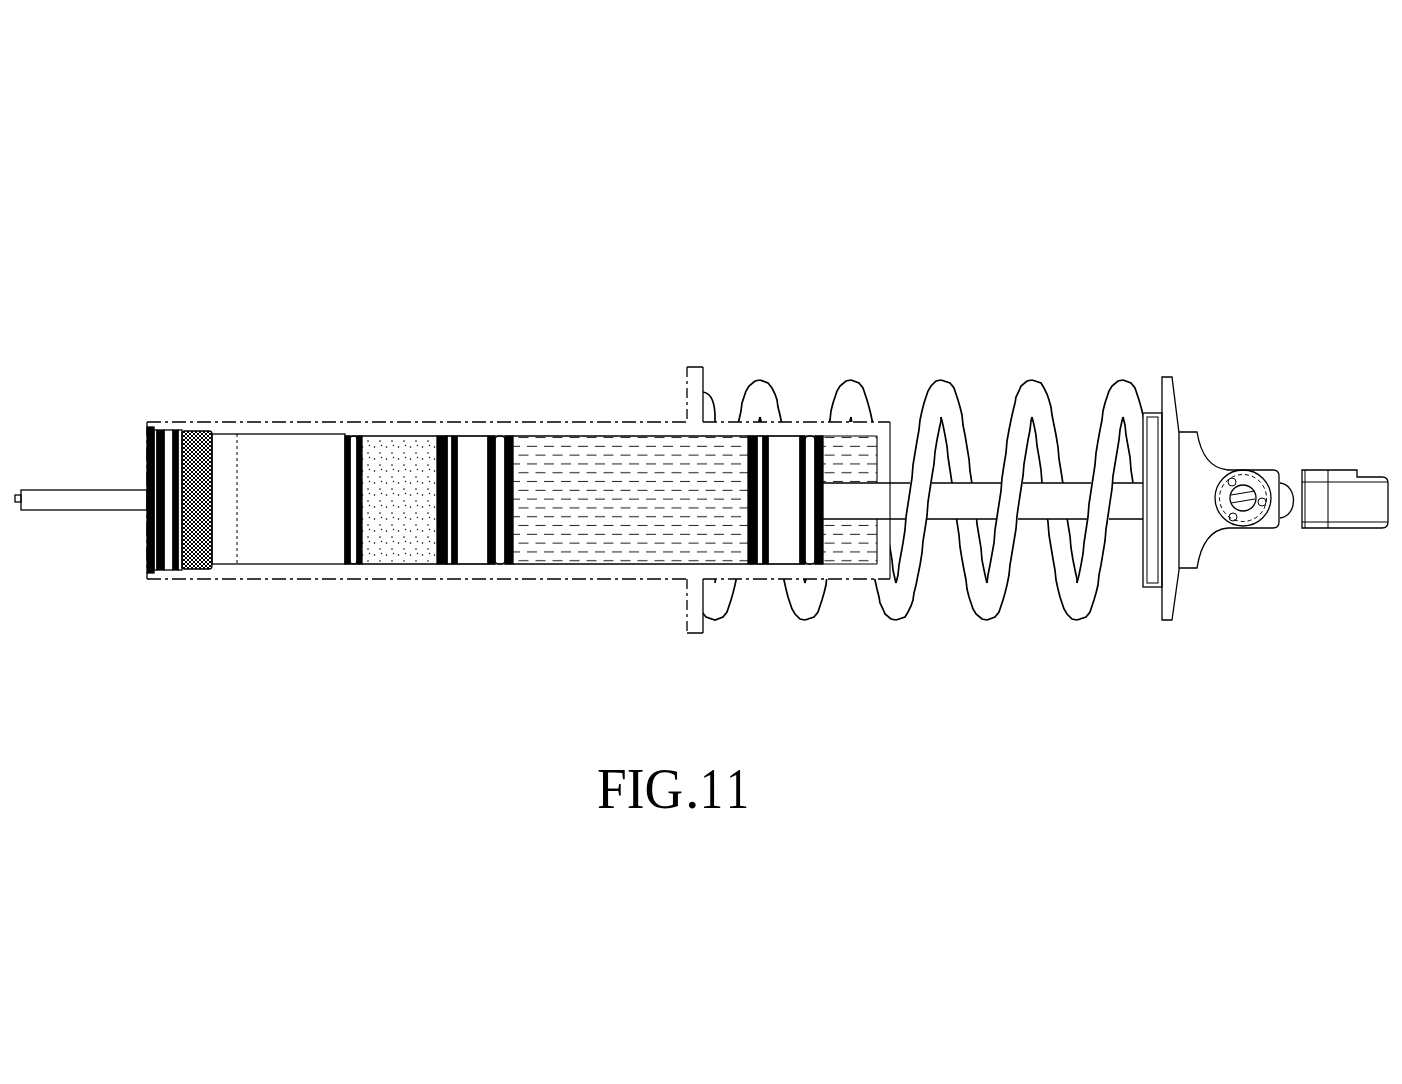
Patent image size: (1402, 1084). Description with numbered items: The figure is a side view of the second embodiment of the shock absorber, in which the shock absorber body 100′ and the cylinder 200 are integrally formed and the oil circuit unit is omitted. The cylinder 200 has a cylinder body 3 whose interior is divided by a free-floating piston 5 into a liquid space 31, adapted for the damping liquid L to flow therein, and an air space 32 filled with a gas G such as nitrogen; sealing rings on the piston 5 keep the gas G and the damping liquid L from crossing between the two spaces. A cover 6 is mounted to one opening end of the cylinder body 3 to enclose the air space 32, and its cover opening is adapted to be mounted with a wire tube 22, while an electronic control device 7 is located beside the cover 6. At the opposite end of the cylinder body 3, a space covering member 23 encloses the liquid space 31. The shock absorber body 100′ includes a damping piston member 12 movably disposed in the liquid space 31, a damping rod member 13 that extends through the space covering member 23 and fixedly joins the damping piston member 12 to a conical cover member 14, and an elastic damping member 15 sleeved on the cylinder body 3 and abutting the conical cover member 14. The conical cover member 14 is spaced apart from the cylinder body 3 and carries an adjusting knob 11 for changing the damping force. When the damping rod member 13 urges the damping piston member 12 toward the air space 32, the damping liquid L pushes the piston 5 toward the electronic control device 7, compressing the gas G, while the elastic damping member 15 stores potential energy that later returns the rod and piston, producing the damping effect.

The wire tube 22 is at (105, 488).
The cylinder body 3 is at (266, 404).
The cylinder 200 is at (417, 310).
The cover 6 is at (173, 565).
The electronic control device 7 is at (299, 548).
The air space 32 is at (400, 548).
The gas G is at (382, 450).
The piston 5 is at (474, 447).
The damping liquid L is at (585, 455).
The liquid space 31 is at (645, 475).
The damping piston member 12 is at (789, 455).
The space covering member 23 is at (898, 430).
The shock absorber body 100′ is at (1067, 360).
The damping rod member 13 is at (977, 497).
The elastic damping member 15 is at (988, 600).
The conical cover member 14 is at (1165, 378).
The adjusting knob 11 is at (1245, 486).